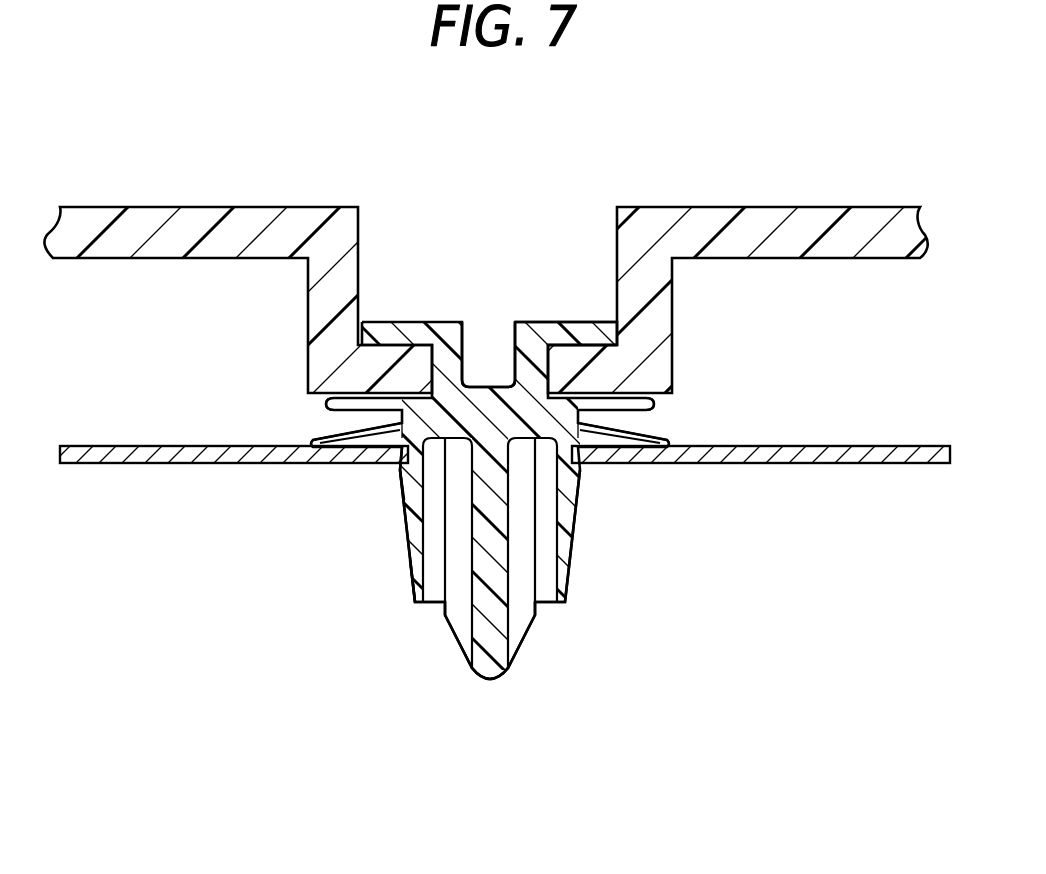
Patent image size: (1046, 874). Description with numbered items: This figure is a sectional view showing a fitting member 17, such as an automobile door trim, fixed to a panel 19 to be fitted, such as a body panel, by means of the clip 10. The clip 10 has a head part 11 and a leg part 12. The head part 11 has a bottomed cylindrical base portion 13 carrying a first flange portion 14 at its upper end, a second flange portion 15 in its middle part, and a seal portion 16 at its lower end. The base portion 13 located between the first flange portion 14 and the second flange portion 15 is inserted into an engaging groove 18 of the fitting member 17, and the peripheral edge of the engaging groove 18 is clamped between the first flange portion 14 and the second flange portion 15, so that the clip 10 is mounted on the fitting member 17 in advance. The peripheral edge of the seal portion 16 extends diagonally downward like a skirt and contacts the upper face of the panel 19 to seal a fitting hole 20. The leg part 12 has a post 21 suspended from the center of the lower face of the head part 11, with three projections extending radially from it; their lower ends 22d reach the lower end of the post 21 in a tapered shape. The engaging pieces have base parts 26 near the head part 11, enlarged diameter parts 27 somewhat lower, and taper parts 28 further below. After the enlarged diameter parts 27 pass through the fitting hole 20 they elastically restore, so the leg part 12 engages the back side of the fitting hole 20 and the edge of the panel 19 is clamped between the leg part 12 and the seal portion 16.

The clip 10 is at (420, 190).
The head part 11 is at (492, 268).
The leg part 12 is at (678, 592).
The base portion 13 is at (533, 345).
The first flange portion 14 is at (594, 321).
The second flange portion 15 is at (655, 400).
The seal portion 16 is at (668, 440).
The fitting member 17 is at (797, 224).
The engaging groove 18 is at (437, 368).
The panel to be fitted 19 is at (880, 446).
The fitting hole 20 is at (600, 462).
The post 21 is at (490, 632).
The lower ends 22d is at (522, 655).
The base parts 26 is at (398, 452).
The enlarged diameter parts 27 is at (397, 495).
The taper parts 28 is at (409, 578).